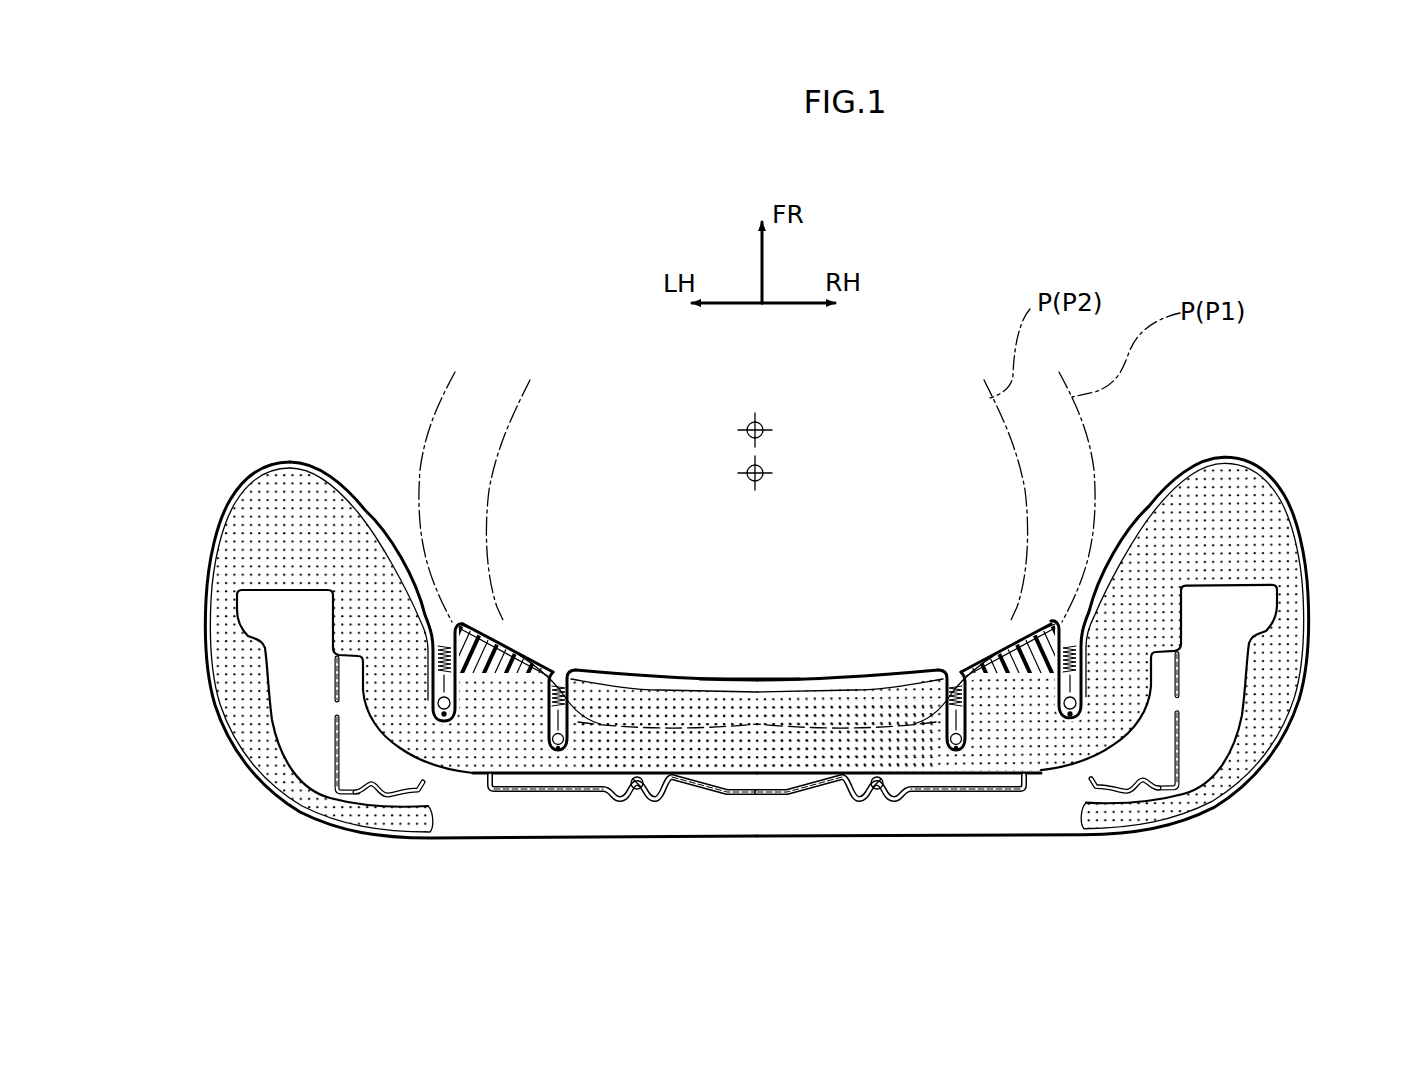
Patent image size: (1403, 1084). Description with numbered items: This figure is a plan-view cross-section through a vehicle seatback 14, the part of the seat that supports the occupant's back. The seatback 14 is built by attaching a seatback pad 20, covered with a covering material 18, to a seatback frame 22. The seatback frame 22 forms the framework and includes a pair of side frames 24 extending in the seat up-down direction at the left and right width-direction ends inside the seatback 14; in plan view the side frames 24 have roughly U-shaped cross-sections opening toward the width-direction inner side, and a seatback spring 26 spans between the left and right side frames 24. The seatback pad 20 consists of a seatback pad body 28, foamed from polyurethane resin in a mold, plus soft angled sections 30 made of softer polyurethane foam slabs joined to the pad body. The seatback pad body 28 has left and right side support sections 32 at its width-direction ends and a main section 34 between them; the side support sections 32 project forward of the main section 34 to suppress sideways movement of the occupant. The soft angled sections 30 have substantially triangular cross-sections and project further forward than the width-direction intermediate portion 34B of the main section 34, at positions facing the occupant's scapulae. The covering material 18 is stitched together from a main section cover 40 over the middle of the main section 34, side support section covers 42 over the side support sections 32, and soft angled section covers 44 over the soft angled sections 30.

The seatback 14 is at (386, 318).
The covering material 18 is at (803, 665).
The seatback pad 20 is at (668, 688).
The seatback frame 22 is at (757, 696).
The side frame 24 is at (333, 750).
The seatback spring 26 is at (757, 792).
The seatback pad body 28 is at (477, 780).
The soft angled section 30 is at (495, 653).
The side support section 32 is at (290, 488).
The main section 34 is at (886, 711).
The seat width direction intermediate portion 34B is at (848, 690).
The main section cover 40 is at (748, 672).
The side support section cover 42 is at (213, 547).
The soft angled section cover 44 is at (523, 653).